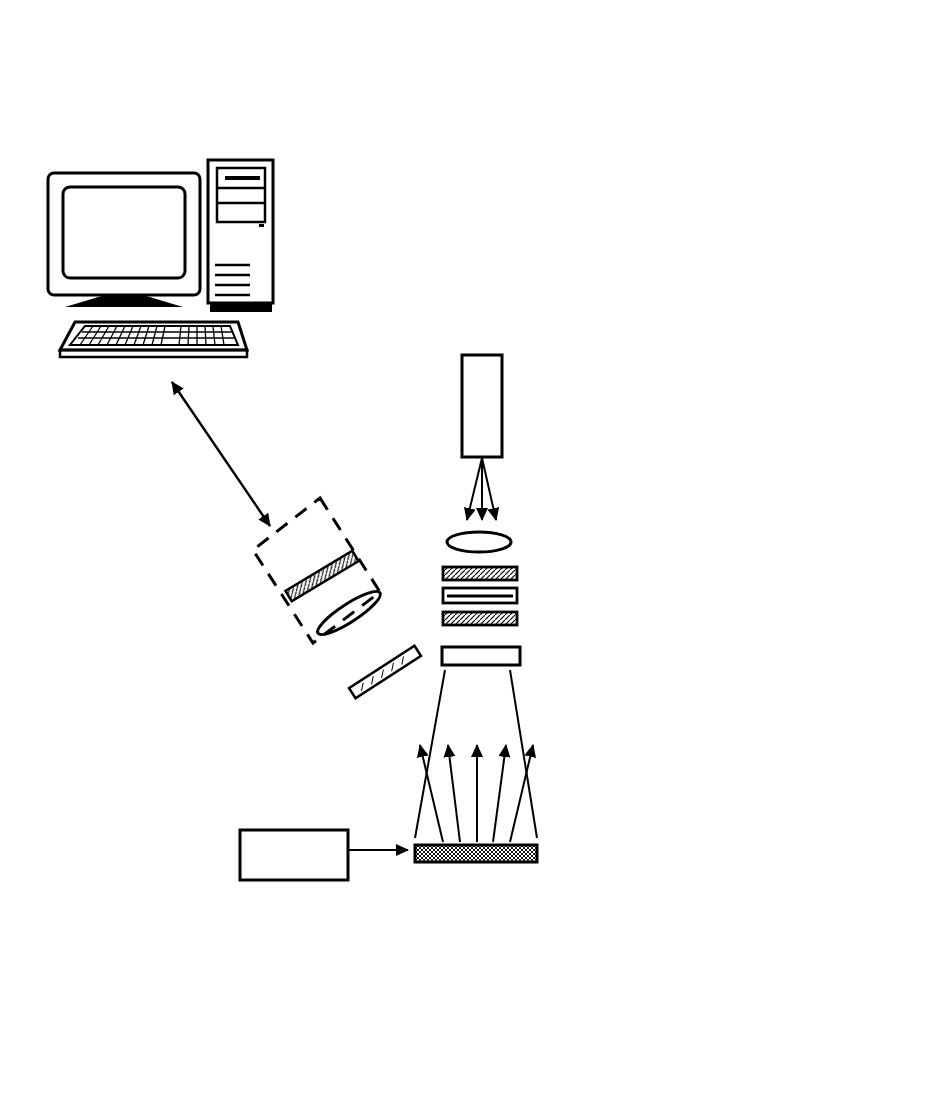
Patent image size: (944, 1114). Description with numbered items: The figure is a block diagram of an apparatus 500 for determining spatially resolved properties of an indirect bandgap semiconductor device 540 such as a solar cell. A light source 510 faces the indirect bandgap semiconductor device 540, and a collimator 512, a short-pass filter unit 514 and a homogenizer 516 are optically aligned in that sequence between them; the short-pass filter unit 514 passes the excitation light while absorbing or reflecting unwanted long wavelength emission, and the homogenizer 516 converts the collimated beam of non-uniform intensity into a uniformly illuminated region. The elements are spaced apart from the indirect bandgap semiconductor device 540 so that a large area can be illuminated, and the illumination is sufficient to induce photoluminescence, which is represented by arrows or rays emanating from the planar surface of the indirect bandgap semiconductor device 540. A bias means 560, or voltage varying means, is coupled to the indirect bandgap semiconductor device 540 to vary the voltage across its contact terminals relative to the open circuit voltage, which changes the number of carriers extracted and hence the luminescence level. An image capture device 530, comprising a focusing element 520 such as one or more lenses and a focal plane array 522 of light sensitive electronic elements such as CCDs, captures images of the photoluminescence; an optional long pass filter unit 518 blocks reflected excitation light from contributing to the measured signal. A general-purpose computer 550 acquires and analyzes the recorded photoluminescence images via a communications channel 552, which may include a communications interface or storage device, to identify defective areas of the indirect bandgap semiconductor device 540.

The apparatus 500 is at (592, 65).
The light source 510 is at (502, 412).
The collimator 512 is at (512, 540).
The short-pass filter unit 514 is at (537, 562).
The homogenizer 516 is at (520, 657).
The long pass filter unit 518 is at (352, 693).
The focusing element 520 is at (320, 633).
The focal plane array 522 is at (287, 598).
The image capture device 530 is at (313, 585).
The indirect bandgap semiconductor device 540 is at (537, 850).
The general-purpose computer 550 is at (157, 140).
The communications channel 552 is at (235, 468).
The bias means 560 is at (262, 830).